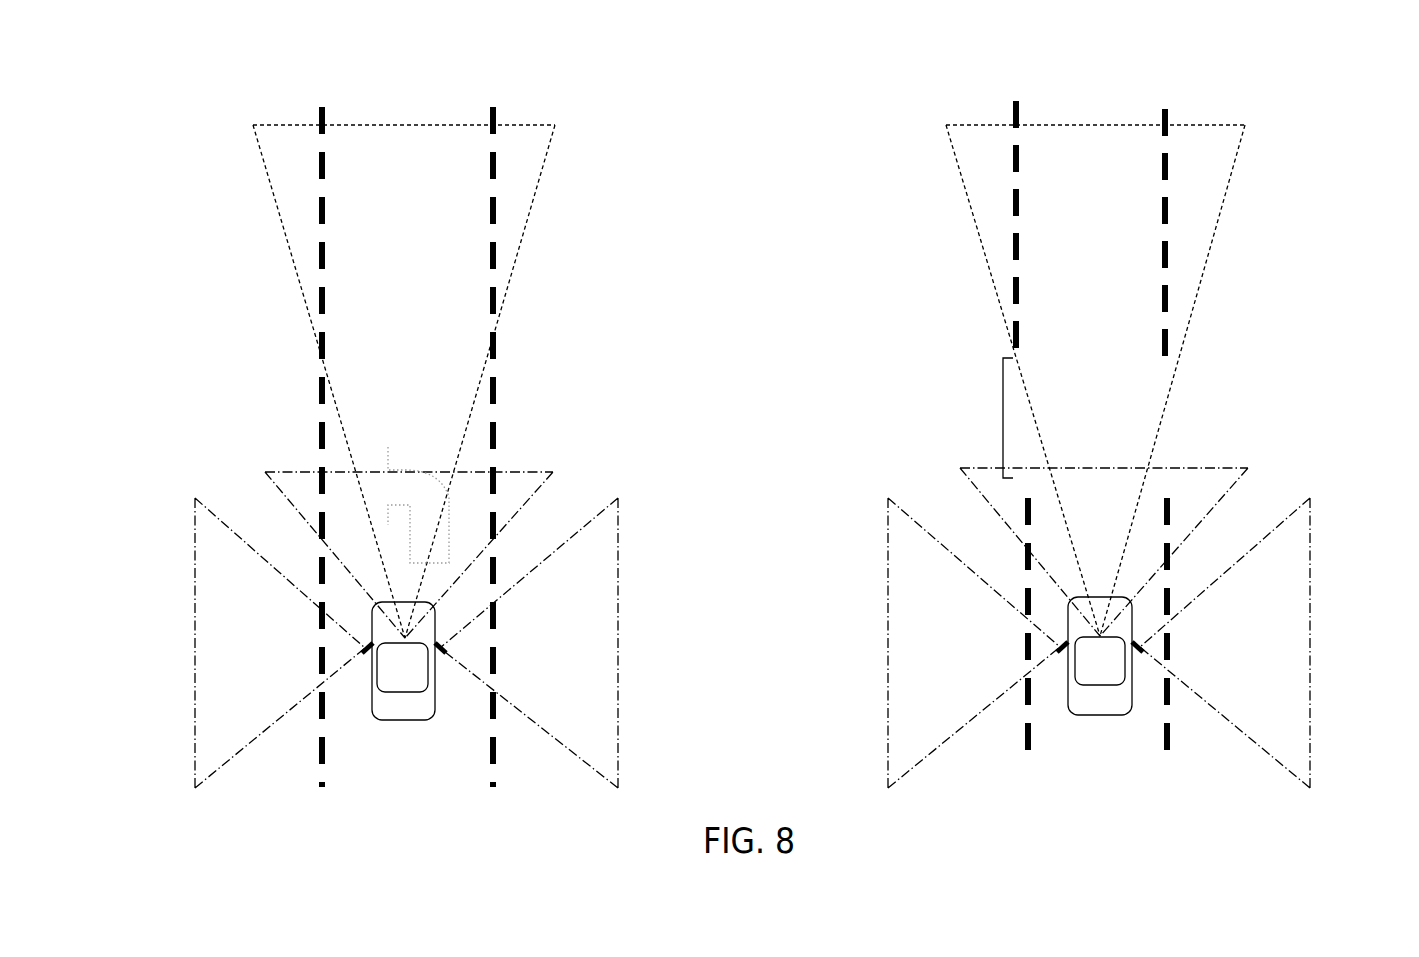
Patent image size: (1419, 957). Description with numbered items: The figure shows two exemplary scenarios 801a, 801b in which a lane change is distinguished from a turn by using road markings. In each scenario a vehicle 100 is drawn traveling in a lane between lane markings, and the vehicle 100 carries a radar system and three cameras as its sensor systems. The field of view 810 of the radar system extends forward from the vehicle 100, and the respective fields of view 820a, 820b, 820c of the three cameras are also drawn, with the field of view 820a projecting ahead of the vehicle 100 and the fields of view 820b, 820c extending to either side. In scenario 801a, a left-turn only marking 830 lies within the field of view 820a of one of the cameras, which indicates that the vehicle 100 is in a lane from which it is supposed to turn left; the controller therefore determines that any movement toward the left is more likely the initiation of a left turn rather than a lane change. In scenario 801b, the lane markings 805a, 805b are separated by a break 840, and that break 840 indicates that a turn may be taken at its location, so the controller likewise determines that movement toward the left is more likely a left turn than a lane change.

The scenario 801a is at (205, 165).
The scenario 801b is at (1320, 147).
The lane marking 805a is at (1023, 735).
The lane marking 805b is at (1012, 112).
The field of view of the radar system 810 is at (975, 225).
The field of view of a camera 820a is at (963, 468).
The field of view of a camera 820b is at (195, 602).
The field of view of a camera 820c is at (911, 643).
The left-turn only marking 830 is at (418, 458).
The break 840 is at (1003, 427).
The vehicle 100 is at (402, 720).